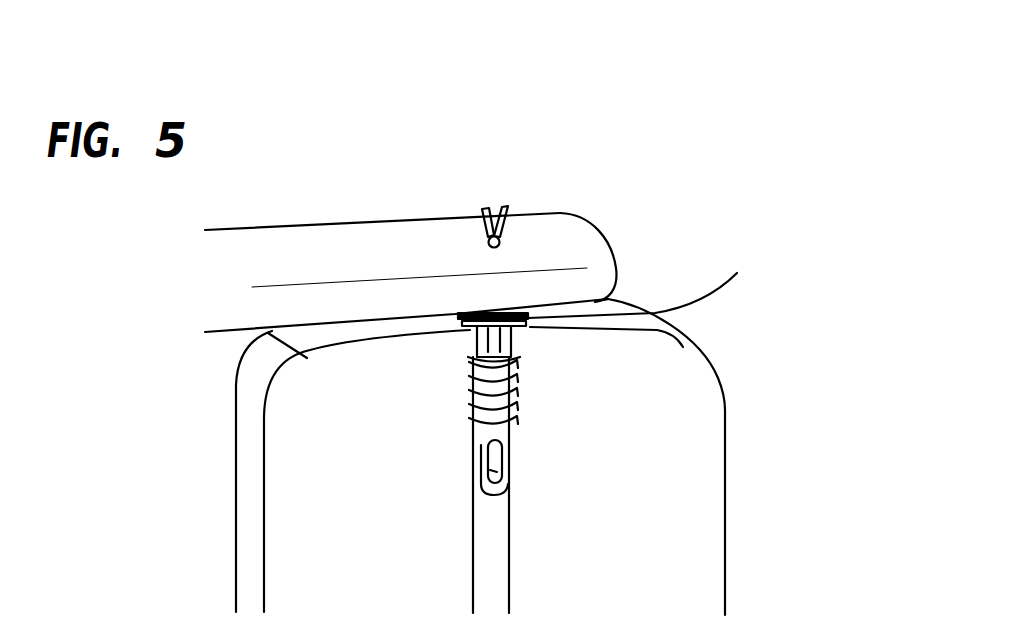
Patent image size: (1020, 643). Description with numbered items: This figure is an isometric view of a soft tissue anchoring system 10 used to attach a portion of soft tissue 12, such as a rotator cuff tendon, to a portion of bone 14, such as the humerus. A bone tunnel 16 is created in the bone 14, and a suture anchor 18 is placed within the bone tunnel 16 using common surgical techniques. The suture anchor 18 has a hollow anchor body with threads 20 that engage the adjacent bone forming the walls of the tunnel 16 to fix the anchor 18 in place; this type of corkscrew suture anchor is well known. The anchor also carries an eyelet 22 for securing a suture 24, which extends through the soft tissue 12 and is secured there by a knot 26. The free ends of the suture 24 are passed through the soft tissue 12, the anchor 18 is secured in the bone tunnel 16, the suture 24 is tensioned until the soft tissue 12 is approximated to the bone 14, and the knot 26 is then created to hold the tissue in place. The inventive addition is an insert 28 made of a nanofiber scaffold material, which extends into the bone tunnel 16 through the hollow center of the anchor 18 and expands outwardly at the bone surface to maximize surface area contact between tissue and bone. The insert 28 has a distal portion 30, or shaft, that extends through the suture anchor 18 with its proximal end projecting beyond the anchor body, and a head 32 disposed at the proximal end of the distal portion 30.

The soft tissue anchoring system 10 is at (645, 287).
The soft tissue 12 is at (273, 255).
The bone 14 is at (357, 518).
The bone tunnel 16 is at (509, 522).
The suture anchor 18 is at (528, 370).
The threads 20 is at (513, 397).
The eyelet 22 is at (470, 358).
The suture 24 is at (505, 207).
The knot 26 is at (567, 218).
The insert 28 is at (468, 463).
The distal portion 30 is at (513, 470).
The head 32 is at (646, 279).